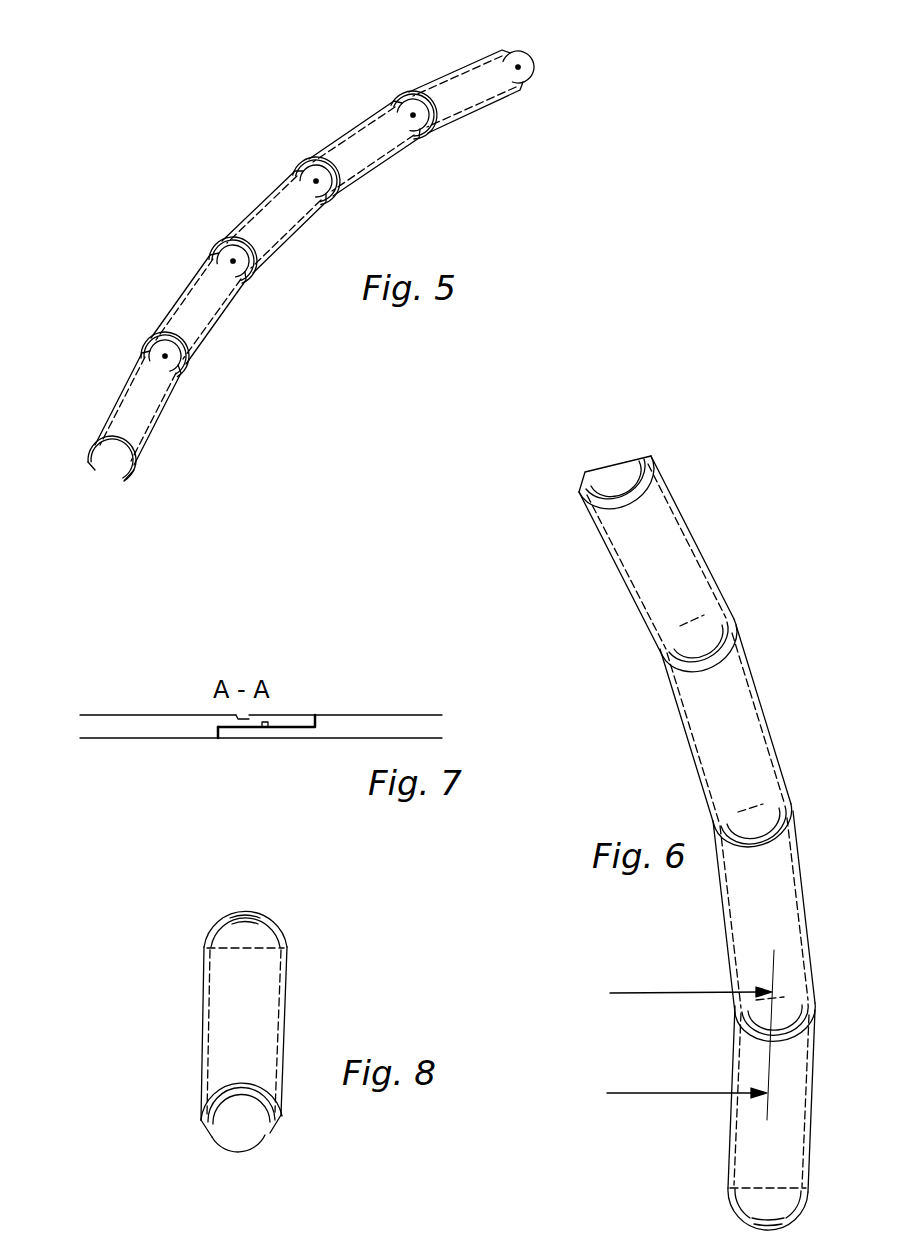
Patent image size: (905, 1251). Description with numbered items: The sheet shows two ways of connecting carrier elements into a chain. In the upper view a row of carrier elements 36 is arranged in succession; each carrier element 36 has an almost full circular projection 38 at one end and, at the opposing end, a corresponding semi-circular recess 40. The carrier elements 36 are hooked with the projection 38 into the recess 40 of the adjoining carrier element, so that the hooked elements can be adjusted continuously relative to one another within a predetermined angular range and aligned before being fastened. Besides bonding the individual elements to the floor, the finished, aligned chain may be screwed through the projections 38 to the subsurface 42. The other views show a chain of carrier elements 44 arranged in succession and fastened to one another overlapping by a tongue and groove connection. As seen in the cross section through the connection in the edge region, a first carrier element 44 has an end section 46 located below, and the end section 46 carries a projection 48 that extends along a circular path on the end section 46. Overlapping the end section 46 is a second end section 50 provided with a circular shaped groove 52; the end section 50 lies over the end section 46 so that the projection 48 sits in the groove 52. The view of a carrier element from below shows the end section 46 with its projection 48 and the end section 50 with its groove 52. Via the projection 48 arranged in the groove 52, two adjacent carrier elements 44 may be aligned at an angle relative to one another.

In FIG. 5, the carrier element 36 is at (468, 88).
In FIG. 5, the circular projection 38 is at (527, 61).
In FIG. 5, the semi-circular recess 40 is at (410, 92).
In FIG. 5, the subsurface 42 is at (225, 262).
In FIG. 6, the carrier element 44 is at (788, 1107).
In FIG. 7, the carrier element 44 is at (261, 716).
In FIG. 7, the end section 46 is at (238, 746).
In FIG. 8, the end section 46 is at (266, 1120).
In FIG. 7, the projection 48 is at (270, 722).
In FIG. 8, the projection 48 is at (233, 1108).
In FIG. 7, the end section 50 is at (236, 722).
In FIG. 8, the end section 50 is at (230, 1039).
In FIG. 8, the circular shaped groove 52 is at (226, 932).